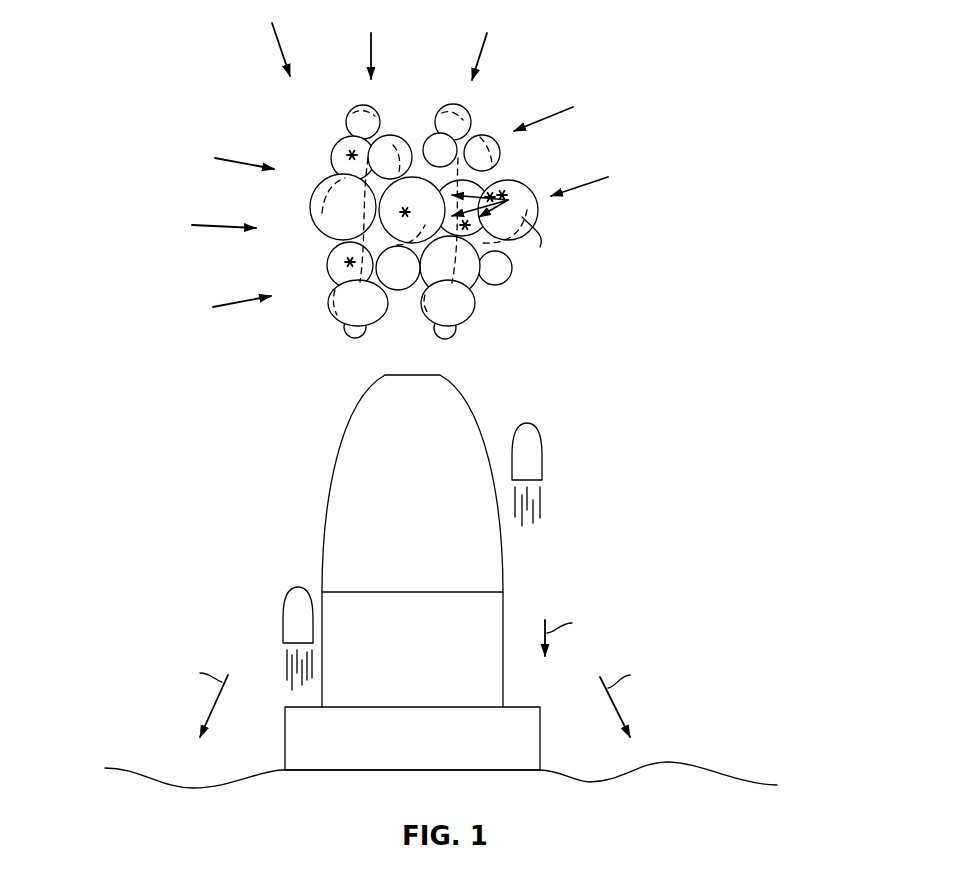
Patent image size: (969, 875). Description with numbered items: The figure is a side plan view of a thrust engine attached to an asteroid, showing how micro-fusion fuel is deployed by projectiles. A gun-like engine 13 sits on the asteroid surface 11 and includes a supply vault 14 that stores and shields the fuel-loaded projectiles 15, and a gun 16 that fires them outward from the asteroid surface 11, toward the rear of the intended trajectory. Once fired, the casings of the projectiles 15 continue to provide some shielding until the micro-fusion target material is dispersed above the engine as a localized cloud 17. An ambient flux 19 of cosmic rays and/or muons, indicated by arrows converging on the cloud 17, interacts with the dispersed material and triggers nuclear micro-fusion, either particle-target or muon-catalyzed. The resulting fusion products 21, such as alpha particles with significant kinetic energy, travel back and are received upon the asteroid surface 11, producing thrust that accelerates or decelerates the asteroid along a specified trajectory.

The asteroid surface 11 is at (713, 770).
The gun-like engine 13 is at (306, 499).
The supply vault 14 is at (493, 578).
The projectile 15 is at (543, 470).
The gun 16 is at (532, 707).
The localized cloud 17 is at (447, 107).
The ambient flux 19 is at (548, 117).
The fusion products 21 is at (208, 715).